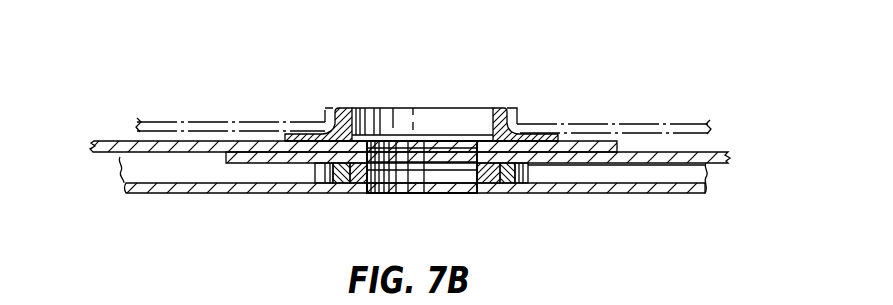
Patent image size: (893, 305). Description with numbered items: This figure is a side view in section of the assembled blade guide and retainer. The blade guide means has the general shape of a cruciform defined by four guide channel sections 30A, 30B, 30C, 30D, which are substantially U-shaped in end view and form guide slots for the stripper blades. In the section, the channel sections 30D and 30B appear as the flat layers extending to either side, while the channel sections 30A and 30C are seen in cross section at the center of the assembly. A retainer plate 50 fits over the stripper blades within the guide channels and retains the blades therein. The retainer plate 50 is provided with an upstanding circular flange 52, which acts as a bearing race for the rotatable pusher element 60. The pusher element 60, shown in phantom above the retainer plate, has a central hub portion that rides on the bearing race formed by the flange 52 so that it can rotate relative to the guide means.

The guide channel section 30D is at (107, 147).
The guide channel section 30B is at (715, 152).
The guide channel section 30A is at (344, 190).
The guide channel section 30C is at (358, 182).
The retainer plate 50 is at (309, 133).
The upstanding circular flange 52 is at (497, 108).
The rotatable pusher element 60 is at (252, 122).